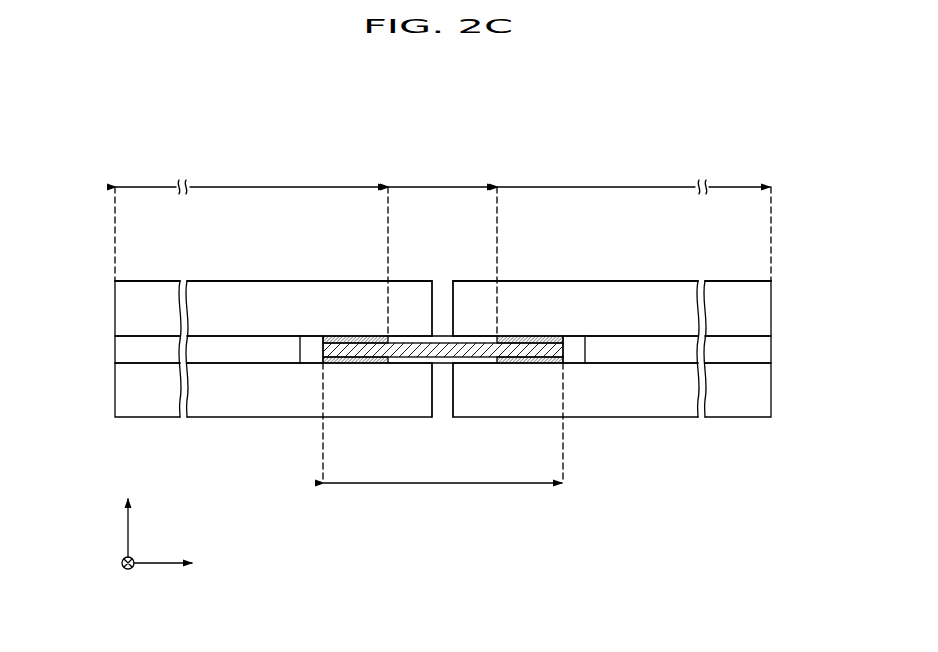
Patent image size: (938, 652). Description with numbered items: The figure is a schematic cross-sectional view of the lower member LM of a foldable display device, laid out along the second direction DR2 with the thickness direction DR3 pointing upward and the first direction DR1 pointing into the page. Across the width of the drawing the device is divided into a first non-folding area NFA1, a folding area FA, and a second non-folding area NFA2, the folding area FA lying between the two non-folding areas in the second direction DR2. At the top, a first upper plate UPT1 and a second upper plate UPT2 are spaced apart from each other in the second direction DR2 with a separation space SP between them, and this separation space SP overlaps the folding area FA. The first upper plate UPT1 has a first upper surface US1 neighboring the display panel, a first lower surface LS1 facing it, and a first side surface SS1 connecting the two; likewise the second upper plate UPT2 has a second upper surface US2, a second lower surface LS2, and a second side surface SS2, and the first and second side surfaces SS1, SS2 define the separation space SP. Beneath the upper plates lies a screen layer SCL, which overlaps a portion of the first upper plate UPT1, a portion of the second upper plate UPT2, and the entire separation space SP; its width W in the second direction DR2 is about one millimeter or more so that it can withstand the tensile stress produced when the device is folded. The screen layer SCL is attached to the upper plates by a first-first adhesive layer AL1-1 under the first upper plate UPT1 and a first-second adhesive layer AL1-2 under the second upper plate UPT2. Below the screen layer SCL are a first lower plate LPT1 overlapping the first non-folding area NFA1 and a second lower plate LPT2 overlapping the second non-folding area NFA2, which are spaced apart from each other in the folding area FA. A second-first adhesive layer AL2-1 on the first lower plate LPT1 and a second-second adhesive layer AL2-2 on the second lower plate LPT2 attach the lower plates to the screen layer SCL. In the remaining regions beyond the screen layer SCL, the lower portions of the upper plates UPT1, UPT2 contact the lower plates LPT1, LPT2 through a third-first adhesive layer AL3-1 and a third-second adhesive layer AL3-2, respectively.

The lower member LM is at (807, 183).
The first non-folding area NFA1 is at (251, 221).
The folding area FA is at (442, 248).
The second non-folding area NFA2 is at (634, 221).
The first upper surface US1 is at (135, 281).
The second upper surface US2 is at (750, 281).
The first upper plate UPT1 is at (125, 306).
The second upper plate UPT2 is at (760, 306).
The first lower surface LS1 is at (135, 337).
The second lower surface LS2 is at (750, 337).
The third-first adhesive layer AL3-1 is at (125, 355).
The third-second adhesive layer AL3-2 is at (760, 355).
The first lower plate LPT1 is at (125, 391).
The second lower plate LPT2 is at (760, 391).
The first-first adhesive layer AL1-1 is at (347, 339).
The first-second adhesive layer AL1-2 is at (534, 339).
The second-first adhesive layer AL2-1 is at (354, 364).
The second-second adhesive layer AL2-2 is at (522, 364).
The first side surface SS1 is at (433, 306).
The second side surface SS2 is at (453, 306).
The screen layer SCL is at (418, 350).
The separation space SP is at (436, 317).
The width W is at (443, 439).
The first direction DR1 is at (128, 576).
The second direction DR2 is at (185, 563).
The third direction DR3 is at (128, 515).